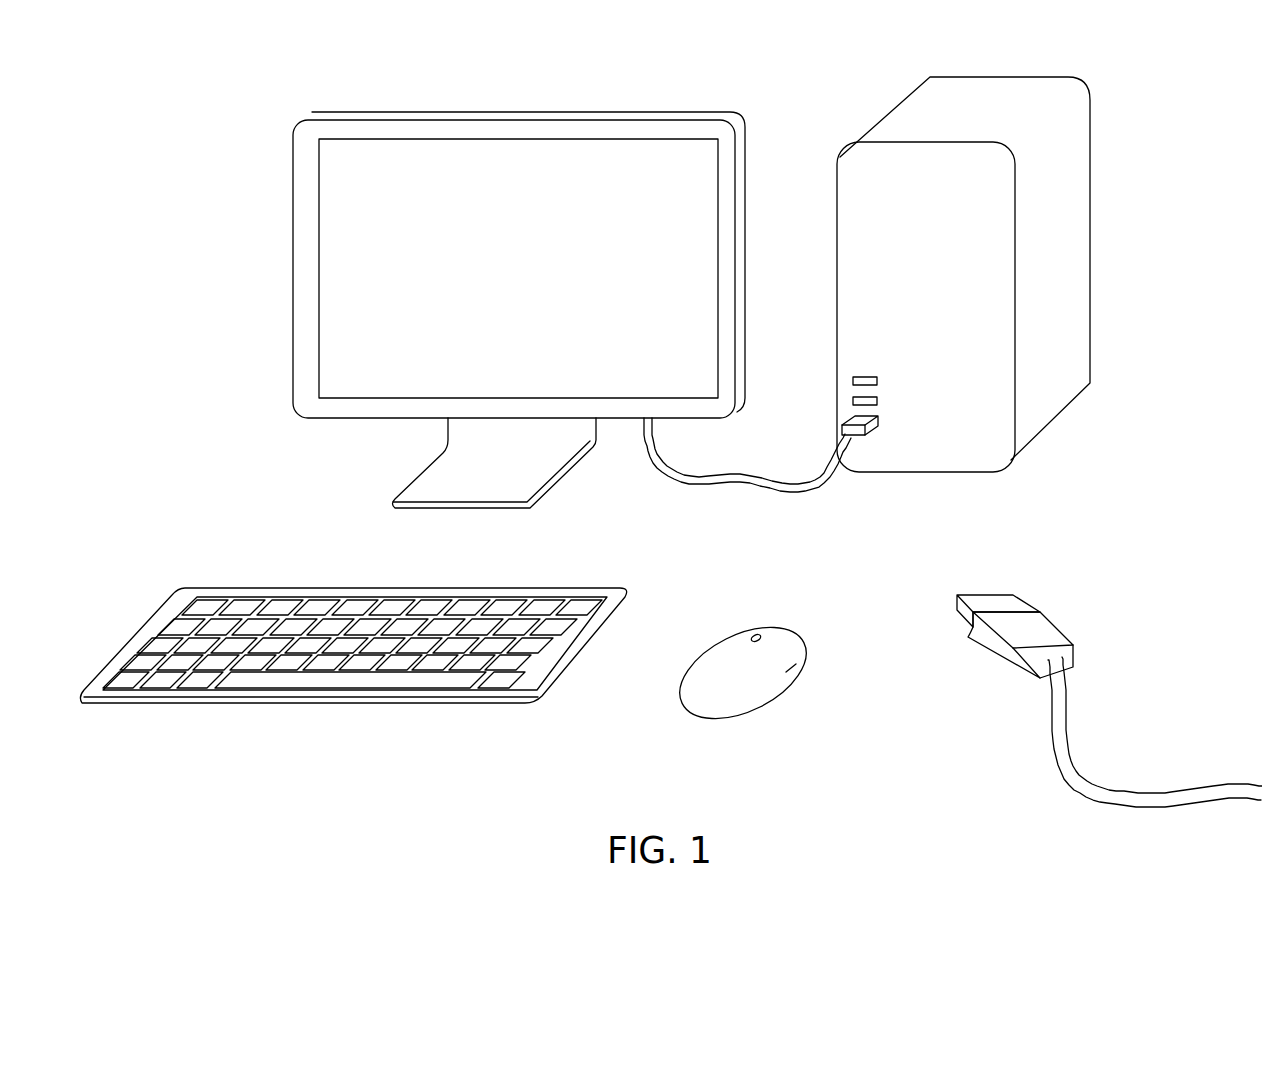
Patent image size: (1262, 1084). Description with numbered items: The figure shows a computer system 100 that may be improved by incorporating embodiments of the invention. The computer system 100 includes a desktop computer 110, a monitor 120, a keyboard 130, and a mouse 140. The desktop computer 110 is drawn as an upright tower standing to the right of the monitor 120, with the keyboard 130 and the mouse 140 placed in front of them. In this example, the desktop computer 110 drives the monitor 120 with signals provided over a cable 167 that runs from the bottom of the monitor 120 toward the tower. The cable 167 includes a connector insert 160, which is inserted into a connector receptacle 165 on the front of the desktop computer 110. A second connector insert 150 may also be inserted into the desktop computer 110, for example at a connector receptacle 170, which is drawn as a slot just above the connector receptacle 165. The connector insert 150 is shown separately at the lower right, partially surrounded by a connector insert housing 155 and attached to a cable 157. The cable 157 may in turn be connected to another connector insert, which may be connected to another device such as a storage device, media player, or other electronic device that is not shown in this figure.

The computer system 100 is at (290, 263).
The desktop computer 110 is at (1097, 105).
The monitor 120 is at (527, 77).
The keyboard 130 is at (285, 706).
The mouse 140 is at (730, 718).
The connector insert 150 is at (988, 594).
The connector insert housing 155 is at (1054, 624).
The cable 157 is at (1049, 748).
The connector insert 160 is at (838, 430).
The connector receptacle 165 is at (880, 420).
The cable 167 is at (793, 490).
The connector receptacle 170 is at (878, 382).